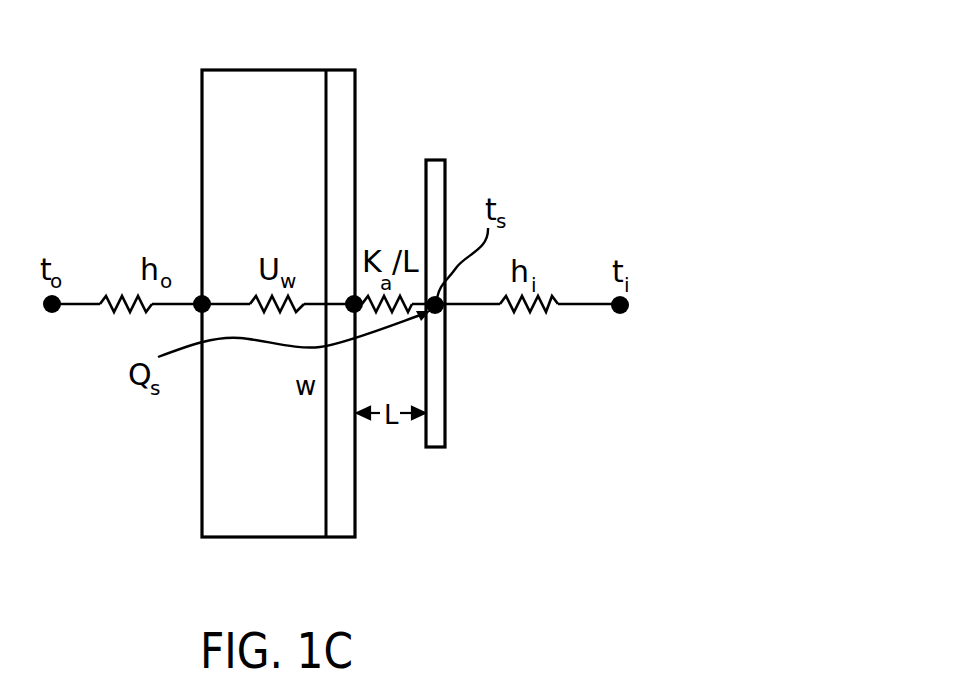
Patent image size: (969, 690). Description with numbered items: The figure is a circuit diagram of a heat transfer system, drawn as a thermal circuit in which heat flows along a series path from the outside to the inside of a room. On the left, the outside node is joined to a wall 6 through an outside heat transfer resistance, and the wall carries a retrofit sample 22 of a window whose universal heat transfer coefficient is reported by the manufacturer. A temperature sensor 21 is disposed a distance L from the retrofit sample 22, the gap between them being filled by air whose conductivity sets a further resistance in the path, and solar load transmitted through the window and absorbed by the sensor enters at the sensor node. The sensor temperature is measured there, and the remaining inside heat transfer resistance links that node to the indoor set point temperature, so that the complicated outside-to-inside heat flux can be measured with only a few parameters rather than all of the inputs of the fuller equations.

The wall 6 is at (228, 121).
The temperature sensor 21 is at (437, 430).
The retrofit sample of a window 22 is at (338, 505).